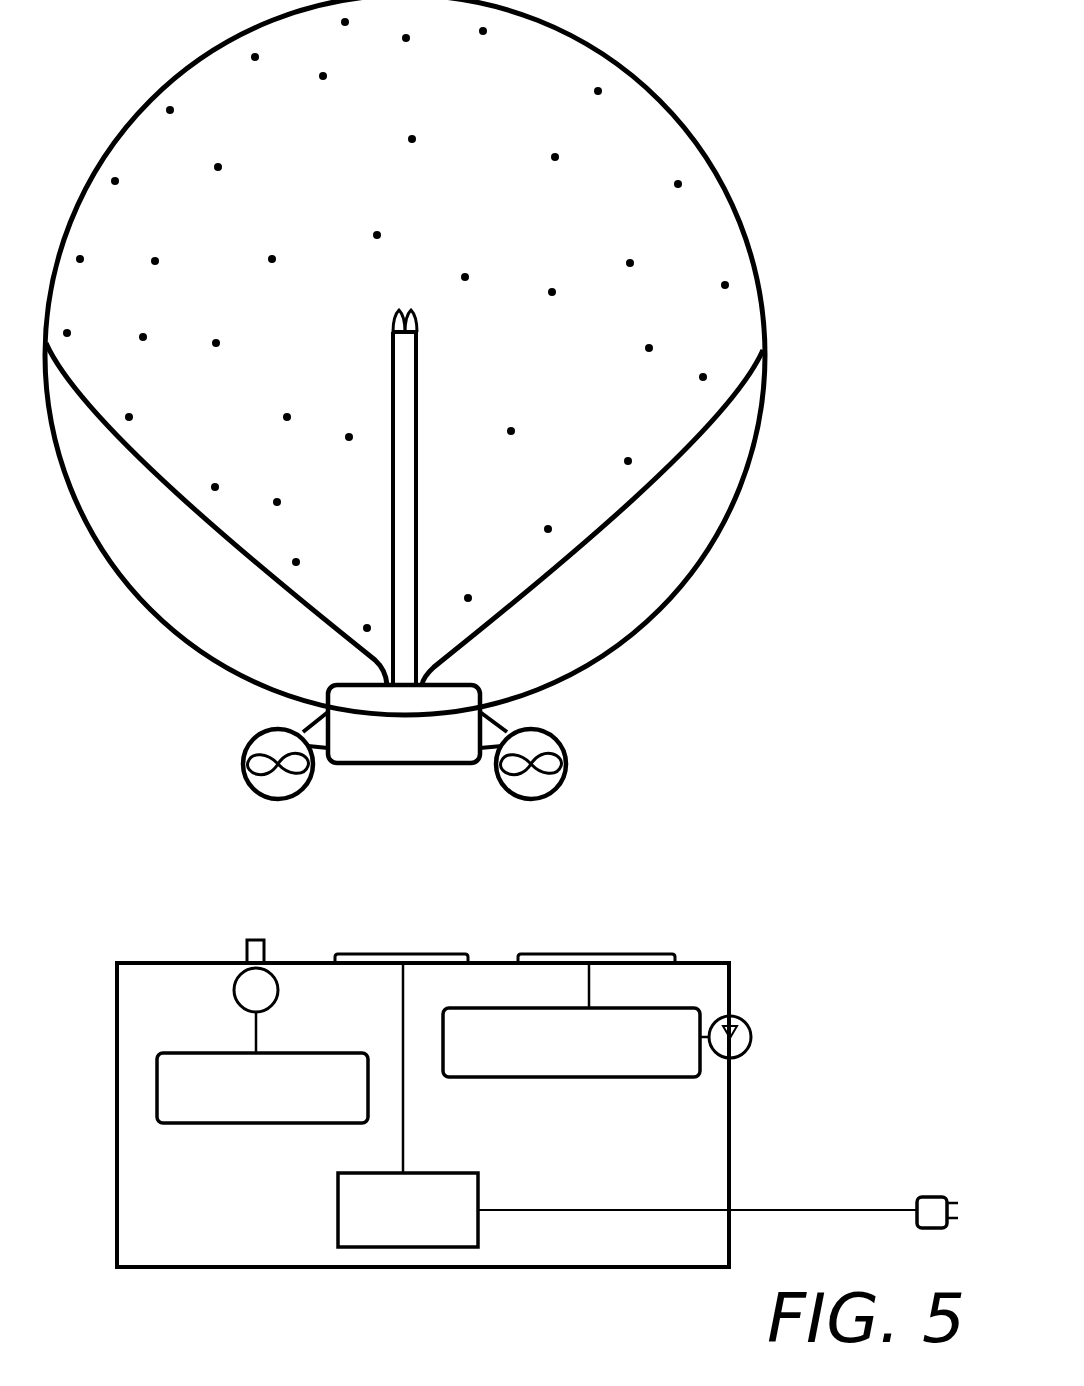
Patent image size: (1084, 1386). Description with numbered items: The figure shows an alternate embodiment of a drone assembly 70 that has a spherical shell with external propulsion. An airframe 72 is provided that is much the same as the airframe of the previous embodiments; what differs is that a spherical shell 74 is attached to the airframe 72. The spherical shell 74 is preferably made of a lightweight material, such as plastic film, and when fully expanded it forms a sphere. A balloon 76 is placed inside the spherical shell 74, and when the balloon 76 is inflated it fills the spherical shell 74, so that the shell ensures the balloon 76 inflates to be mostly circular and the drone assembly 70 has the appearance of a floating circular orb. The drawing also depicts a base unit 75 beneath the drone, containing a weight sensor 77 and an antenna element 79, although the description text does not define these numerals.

The drone assembly 70 is at (491, 426).
The airframe 72 is at (415, 742).
The spherical shell 74 is at (607, 653).
The base station 75 is at (528, 1074).
The balloon 76 is at (684, 452).
The weight sensor 77 is at (532, 1077).
The antenna 79 is at (751, 1037).